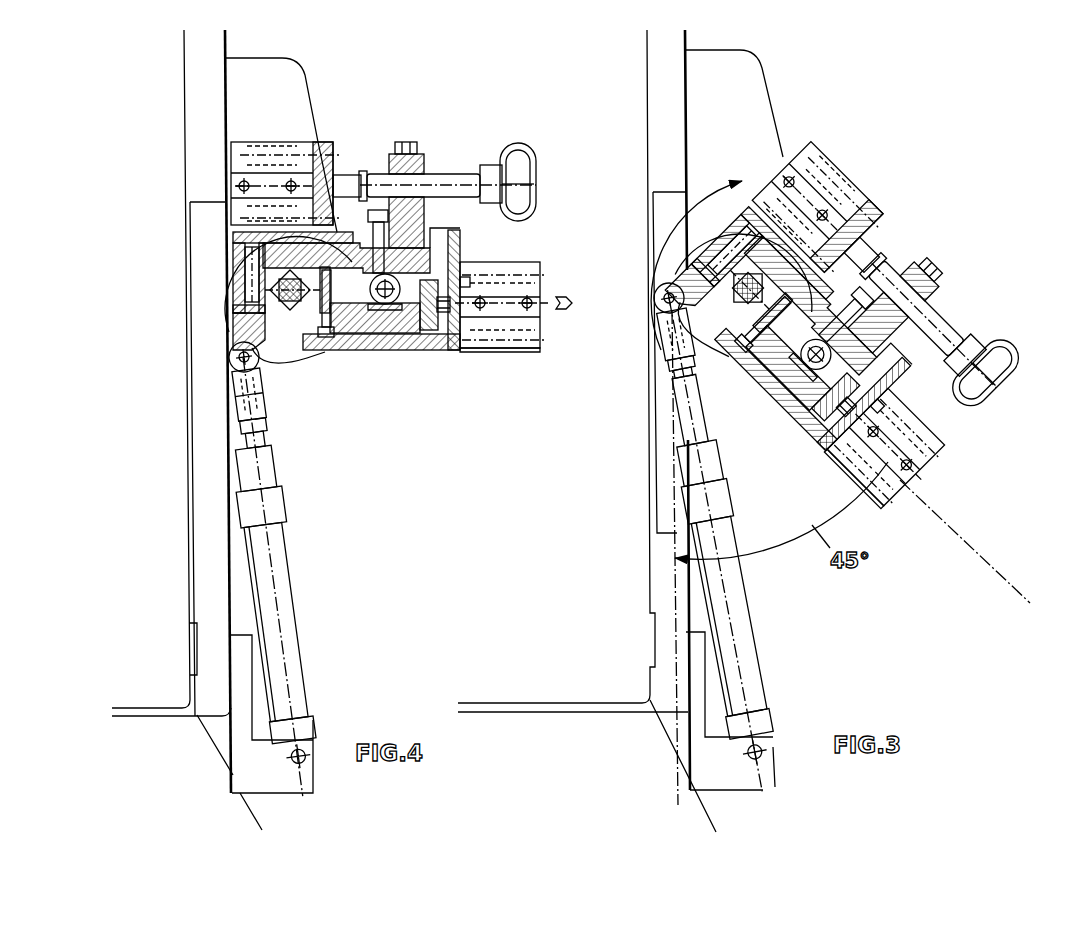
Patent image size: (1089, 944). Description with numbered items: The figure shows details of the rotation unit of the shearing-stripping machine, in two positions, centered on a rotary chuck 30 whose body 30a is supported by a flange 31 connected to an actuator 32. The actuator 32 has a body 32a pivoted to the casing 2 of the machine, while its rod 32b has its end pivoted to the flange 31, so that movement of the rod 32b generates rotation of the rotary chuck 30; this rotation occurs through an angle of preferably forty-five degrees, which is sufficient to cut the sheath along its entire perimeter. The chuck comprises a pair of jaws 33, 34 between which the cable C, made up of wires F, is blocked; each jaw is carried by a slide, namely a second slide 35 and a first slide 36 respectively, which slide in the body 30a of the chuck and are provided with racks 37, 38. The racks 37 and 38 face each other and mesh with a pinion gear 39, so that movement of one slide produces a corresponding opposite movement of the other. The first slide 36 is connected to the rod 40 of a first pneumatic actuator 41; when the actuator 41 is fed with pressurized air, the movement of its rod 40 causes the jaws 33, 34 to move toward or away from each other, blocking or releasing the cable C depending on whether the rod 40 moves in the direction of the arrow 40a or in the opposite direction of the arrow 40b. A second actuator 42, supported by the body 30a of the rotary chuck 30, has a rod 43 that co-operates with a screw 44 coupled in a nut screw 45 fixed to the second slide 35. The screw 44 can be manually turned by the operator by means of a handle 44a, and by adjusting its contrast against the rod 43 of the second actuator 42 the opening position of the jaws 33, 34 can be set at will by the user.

In FIG. 4, the casing 2 is at (212, 607).
In FIG. 3, the casing 2 is at (652, 688).
In FIG. 4, the rotary chuck 30 is at (343, 292).
In FIG. 3, the rotary chuck 30 is at (840, 265).
In FIG. 4, the body of the rotary chuck 30a is at (262, 236).
In FIG. 4, the flange 31 is at (233, 333).
In FIG. 4, the actuator 32 is at (255, 569).
In FIG. 3, the actuator 32 is at (782, 617).
In FIG. 4, the body of the actuator 32a is at (288, 650).
In FIG. 4, the rod of the actuator 32b is at (252, 425).
In FIG. 4, the jaw 33 is at (243, 300).
In FIG. 3, the jaw 33 is at (770, 212).
In FIG. 4, the jaw 34 is at (337, 353).
In FIG. 3, the jaw 34 is at (775, 285).
In FIG. 4, the second slide 35 is at (247, 241).
In FIG. 4, the first slide 36 is at (396, 352).
In FIG. 4, the rack 37 is at (405, 290).
In FIG. 4, the rack 38 is at (415, 353).
In FIG. 4, the pinion gear 39 is at (463, 262).
In FIG. 4, the rod of the first pneumatic actuator 40 is at (500, 305).
In FIG. 4, the arrow 40a is at (465, 352).
In FIG. 4, the arrow 40b is at (571, 292).
In FIG. 4, the first pneumatic actuator 41 is at (524, 337).
In FIG. 4, the second actuator 42 is at (212, 152).
In FIG. 4, the rod of the second actuator 43 is at (344, 177).
In FIG. 4, the screw 44 is at (456, 177).
In FIG. 4, the handle 44a is at (518, 152).
In FIG. 4, the nut screw 45 is at (405, 150).
In FIG. 4, the cable C is at (310, 355).
In FIG. 4, the wires F is at (268, 304).